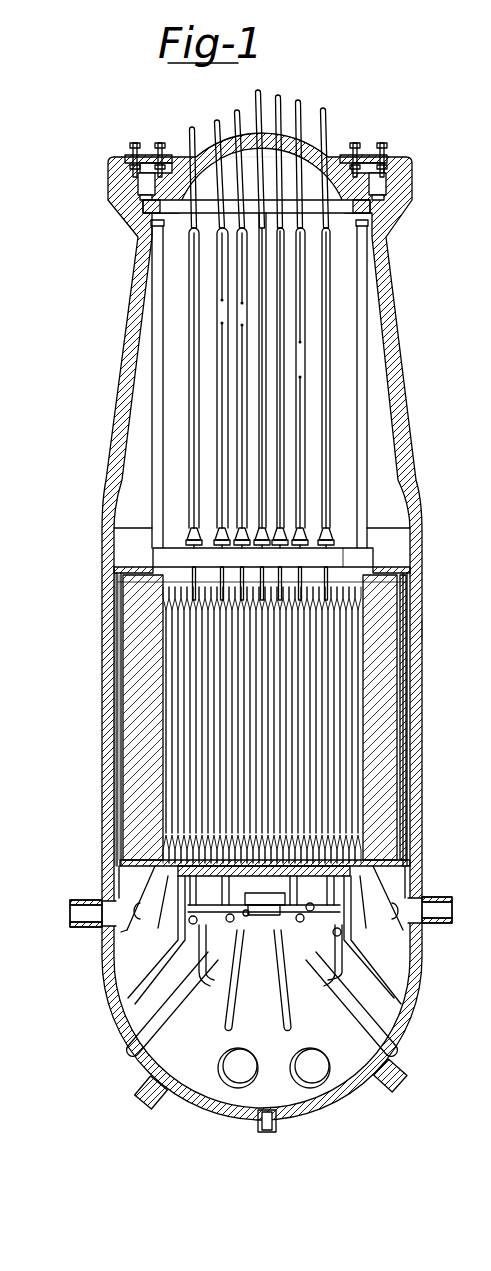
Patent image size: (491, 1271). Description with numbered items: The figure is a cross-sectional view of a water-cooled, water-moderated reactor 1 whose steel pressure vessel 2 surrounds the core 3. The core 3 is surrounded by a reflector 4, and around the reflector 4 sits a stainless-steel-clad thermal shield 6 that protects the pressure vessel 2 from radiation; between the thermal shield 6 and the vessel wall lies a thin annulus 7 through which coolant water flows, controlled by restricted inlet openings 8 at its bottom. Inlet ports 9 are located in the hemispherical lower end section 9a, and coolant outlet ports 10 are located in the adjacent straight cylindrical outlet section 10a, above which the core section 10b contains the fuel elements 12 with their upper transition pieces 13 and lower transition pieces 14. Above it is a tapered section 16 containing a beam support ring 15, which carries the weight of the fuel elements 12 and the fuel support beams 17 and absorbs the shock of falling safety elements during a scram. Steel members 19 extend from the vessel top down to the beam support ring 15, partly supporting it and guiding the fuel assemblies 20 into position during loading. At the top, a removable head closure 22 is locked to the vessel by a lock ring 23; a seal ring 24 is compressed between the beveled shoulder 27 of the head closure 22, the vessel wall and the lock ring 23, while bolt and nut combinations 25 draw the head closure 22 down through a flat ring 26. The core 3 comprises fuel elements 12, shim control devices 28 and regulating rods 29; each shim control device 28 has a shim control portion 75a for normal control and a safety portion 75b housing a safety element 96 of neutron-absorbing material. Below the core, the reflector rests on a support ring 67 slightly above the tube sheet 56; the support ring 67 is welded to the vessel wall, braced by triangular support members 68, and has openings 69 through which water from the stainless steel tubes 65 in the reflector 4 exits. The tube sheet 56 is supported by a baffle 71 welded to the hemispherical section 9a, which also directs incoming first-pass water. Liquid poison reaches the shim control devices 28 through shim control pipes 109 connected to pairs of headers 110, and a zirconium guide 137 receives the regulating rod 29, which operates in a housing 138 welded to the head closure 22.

The reactor 1 is at (43, 433).
The pressure vessel 2 is at (403, 416).
The core 3 is at (260, 719).
The reflector 4 is at (125, 661).
The thermal shield 6 is at (117, 621).
The annulus 7 is at (114, 645).
The inlet openings 8 is at (118, 870).
The inlet ports 9 is at (132, 1077).
The hemispherical lower end section 9a is at (208, 1118).
The coolant outlet ports 10 is at (90, 921).
The straight cylindrical outlet section 10a is at (100, 883).
The core section 10b is at (423, 633).
The fuel elements 12 is at (187, 740).
The upper transition pieces 13 is at (176, 612).
The lower transition pieces 14 is at (203, 833).
The beam support ring 15 is at (130, 572).
The tapered section 16 is at (401, 351).
The fuel support beams 17 is at (343, 548).
The steel members 19 is at (158, 352).
The fuel assemblies 20 is at (335, 778).
The head closure 22 is at (307, 148).
The lock ring 23 is at (138, 182).
The seal ring 24 is at (146, 200).
The bolt and nut combinations 25 is at (361, 152).
The flat ring 26 is at (140, 156).
The beveled shoulder 27 is at (150, 207).
The shim control devices 28 is at (260, 406).
The regulating rods 29 is at (259, 320).
The tube sheet 56 is at (222, 905).
The stainless steel tubes 65 is at (397, 762).
The support ring 67 is at (372, 860).
The triangular support members 68 is at (125, 930).
The openings 69 is at (377, 864).
The baffle 71 is at (159, 985).
The shim control portion 75a is at (345, 727).
The safety portion 75b is at (325, 472).
The safety element 96 is at (195, 560).
The shim control pipes 109 is at (226, 1010).
The headers 110 is at (246, 900).
The zirconium guide 137 is at (263, 639).
The housing 138 is at (262, 372).